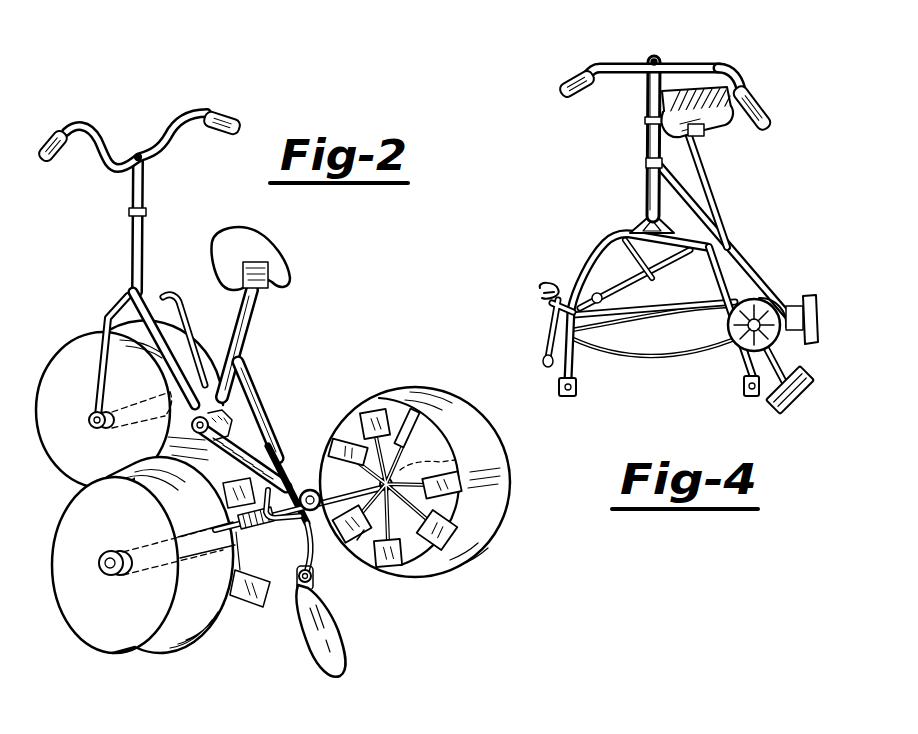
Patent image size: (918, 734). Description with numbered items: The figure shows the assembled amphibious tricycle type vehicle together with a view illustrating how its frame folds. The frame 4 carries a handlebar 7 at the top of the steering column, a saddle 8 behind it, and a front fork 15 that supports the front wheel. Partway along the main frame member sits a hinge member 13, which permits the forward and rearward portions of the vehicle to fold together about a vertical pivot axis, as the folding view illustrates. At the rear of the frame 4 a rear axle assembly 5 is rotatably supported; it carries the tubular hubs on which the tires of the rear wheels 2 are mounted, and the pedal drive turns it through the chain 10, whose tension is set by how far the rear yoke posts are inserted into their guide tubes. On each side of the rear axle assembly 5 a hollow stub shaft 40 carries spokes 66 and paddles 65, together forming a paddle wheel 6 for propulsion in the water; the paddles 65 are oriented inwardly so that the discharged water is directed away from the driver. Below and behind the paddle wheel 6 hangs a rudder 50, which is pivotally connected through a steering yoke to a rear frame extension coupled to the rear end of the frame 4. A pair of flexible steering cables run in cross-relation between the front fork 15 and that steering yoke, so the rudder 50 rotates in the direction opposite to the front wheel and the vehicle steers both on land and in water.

In FIG. 2, the rear wheels 2 is at (480, 432).
In FIG. 2, the frame 4 is at (148, 237).
In FIG. 4, the frame 4 is at (648, 153).
In FIG. 2, the rear axle assembly 5 is at (250, 541).
In FIG. 2, the paddle wheel 6 is at (353, 547).
In FIG. 2, the handlebar 7 is at (159, 155).
In FIG. 4, the handlebar 7 is at (685, 67).
In FIG. 2, the saddle 8 is at (251, 247).
In FIG. 4, the saddle 8 is at (705, 112).
In FIG. 2, the chain 10 is at (258, 400).
In FIG. 4, the chain 10 is at (667, 360).
In FIG. 4, the hinge member 13 is at (810, 294).
In FIG. 2, the front fork 15 is at (108, 317).
In FIG. 2, the hollow stub shaft 40 is at (304, 466).
In FIG. 2, the rudder 50 is at (332, 663).
In FIG. 2, the paddles 65 is at (387, 566).
In FIG. 2, the spokes 66 is at (467, 490).